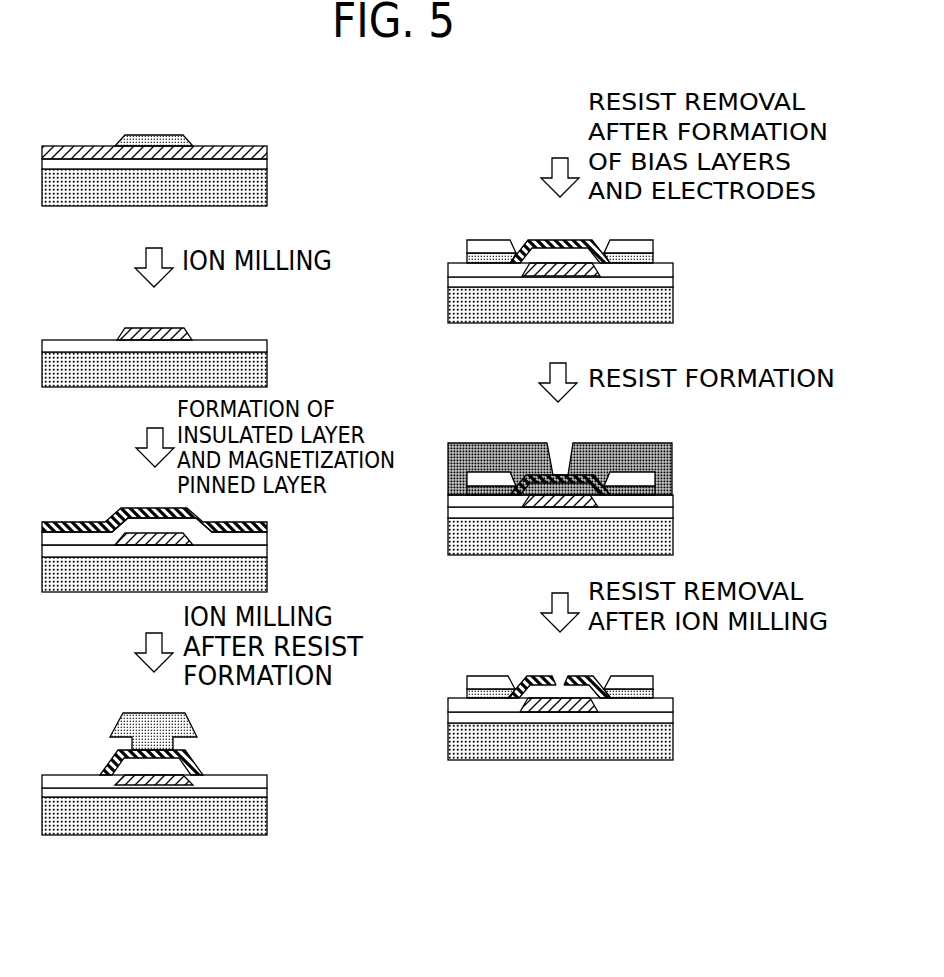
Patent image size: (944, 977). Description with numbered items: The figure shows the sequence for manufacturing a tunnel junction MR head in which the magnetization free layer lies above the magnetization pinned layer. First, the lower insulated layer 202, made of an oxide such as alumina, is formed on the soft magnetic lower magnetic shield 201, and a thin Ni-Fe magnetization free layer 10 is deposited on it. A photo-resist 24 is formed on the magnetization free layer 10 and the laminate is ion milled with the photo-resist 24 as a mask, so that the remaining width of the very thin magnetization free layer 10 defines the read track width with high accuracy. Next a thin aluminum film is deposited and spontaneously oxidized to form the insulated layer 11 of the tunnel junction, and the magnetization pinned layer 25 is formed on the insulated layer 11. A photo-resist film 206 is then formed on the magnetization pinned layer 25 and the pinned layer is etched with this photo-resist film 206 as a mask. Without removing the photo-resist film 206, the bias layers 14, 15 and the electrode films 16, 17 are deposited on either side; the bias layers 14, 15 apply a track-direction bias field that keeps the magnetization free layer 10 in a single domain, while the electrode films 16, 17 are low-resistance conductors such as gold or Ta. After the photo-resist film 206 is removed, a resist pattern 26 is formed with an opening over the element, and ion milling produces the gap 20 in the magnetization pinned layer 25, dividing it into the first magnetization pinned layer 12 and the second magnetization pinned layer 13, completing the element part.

The magnetization free layer 10 is at (222, 152).
The insulated layer 11 is at (253, 540).
The first magnetization pinned layer 12 is at (587, 677).
The second magnetization pinned layer 13 is at (537, 673).
The bias layer 14 is at (653, 258).
The bias layer 15 is at (467, 258).
The electrode film 16 is at (645, 250).
The electrode film 17 is at (490, 247).
The gap 20 is at (560, 687).
The photo-resist 24 is at (152, 142).
The magnetization pinned layer 25 is at (263, 522).
The resist pattern 26 is at (660, 457).
The lower magnetic shield 201 is at (260, 183).
The lower insulated layer 202 is at (258, 165).
The photo-resist film 206 is at (185, 727).